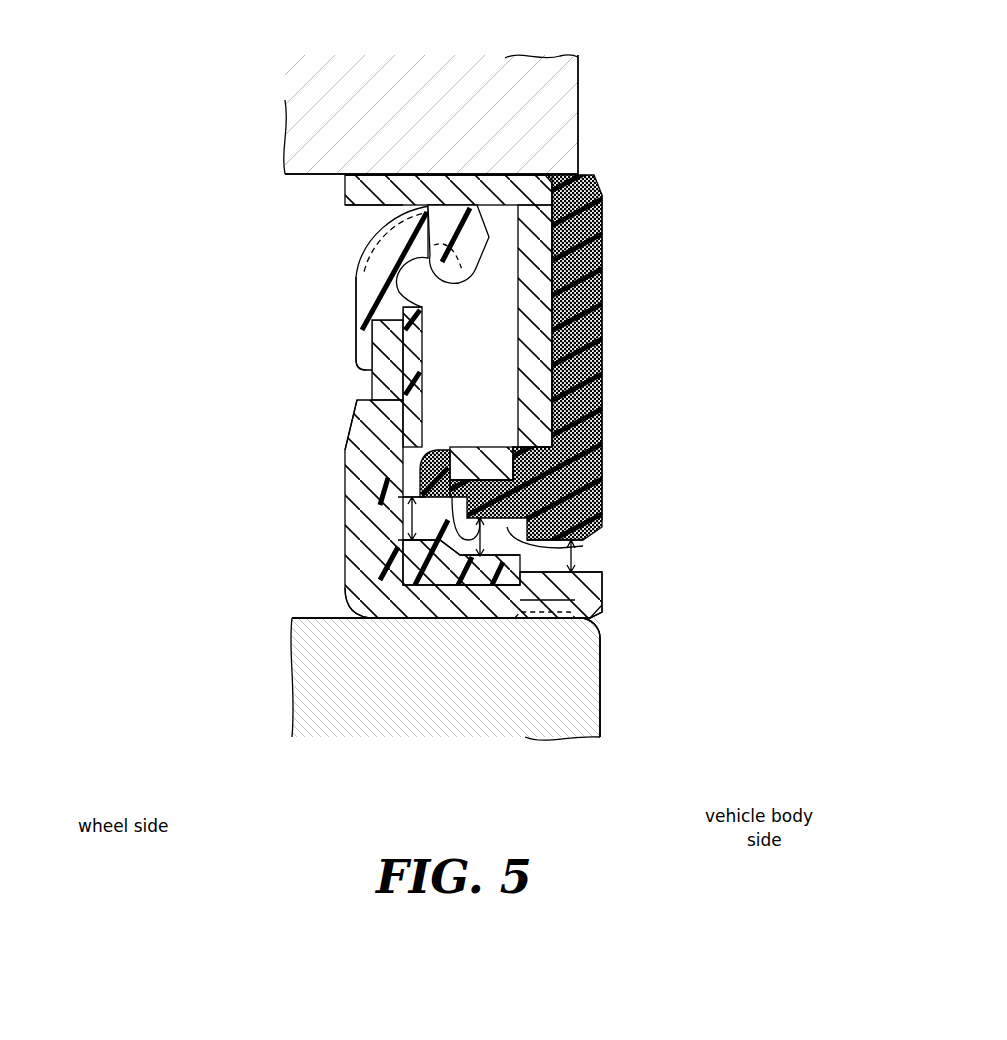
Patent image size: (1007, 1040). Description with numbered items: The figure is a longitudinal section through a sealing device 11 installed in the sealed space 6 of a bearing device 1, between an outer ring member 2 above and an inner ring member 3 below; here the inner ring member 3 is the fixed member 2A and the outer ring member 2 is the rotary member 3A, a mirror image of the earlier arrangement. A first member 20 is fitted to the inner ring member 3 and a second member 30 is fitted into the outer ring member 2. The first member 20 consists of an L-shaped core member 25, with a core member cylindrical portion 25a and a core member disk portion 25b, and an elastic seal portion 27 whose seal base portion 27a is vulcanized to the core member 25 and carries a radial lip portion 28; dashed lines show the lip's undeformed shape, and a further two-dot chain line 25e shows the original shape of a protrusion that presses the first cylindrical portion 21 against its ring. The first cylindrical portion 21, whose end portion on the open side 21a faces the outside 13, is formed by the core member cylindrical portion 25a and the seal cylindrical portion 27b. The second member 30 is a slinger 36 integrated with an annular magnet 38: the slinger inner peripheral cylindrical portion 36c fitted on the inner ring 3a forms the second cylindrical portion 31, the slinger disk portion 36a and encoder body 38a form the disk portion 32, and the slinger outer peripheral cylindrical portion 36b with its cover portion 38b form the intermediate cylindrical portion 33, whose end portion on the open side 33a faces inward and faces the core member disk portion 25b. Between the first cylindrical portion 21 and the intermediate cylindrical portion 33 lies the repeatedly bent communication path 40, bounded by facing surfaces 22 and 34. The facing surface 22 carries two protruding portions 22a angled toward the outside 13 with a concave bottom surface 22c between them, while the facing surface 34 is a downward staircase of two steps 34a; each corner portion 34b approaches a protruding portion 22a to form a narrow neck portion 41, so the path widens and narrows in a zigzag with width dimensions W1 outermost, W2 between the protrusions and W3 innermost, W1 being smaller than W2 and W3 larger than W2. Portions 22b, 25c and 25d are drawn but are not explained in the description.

The bearing device 1 is at (306, 760).
The outer ring member 2 is at (474, 114).
The fixed member 2A is at (570, 702).
The inner ring member 3 is at (496, 677).
The rotary member 3A is at (555, 113).
The inner ring 3a is at (510, 677).
The sealed space 6 is at (173, 449).
The sealing device 11 is at (302, 240).
The outside 13 is at (786, 441).
The first member 20 is at (465, 461).
The first cylindrical portion 21 is at (448, 603).
The end portion on the open side 21a is at (592, 598).
The facing surface 22 is at (417, 565).
The protruding portion 22a is at (350, 598).
The lip tip 22b is at (443, 450).
The concave bottom surface 22c is at (538, 600).
The core member 25 is at (372, 597).
The core member cylindrical portion 25a is at (462, 603).
The core member disk portion 25b is at (380, 405).
The upper lip 25c is at (378, 332).
The chamfer 25d is at (598, 612).
The protruding portion original shape 25e is at (580, 650).
The seal portion 27 is at (398, 572).
The seal base portion 27a is at (385, 360).
The seal cylindrical portion 27b is at (443, 565).
The lip portion 28 is at (443, 238).
The second member 30 is at (683, 350).
The second cylindrical portion 31 is at (428, 185).
The disk portion 32 is at (683, 258).
The intermediate cylindrical portion 33 is at (703, 430).
The end portion on the open side 33a is at (383, 415).
The facing surface 34 is at (560, 515).
The step 34a is at (575, 548).
The corner portion 34b is at (575, 538).
The slinger 36 is at (585, 400).
The slinger disk portion 36a is at (570, 305).
The slinger outer peripheral cylindrical portion 36b is at (585, 450).
The slinger inner peripheral cylindrical portion 36c is at (411, 111).
The annular magnet 38 is at (575, 355).
The encoder body 38a is at (580, 270).
The cover portion 38b is at (585, 480).
The communication path 40 is at (400, 496).
The neck portion 41 is at (457, 603).
The width dimension W1 is at (575, 560).
The width dimension W2 is at (480, 518).
The width dimension W3 is at (405, 530).